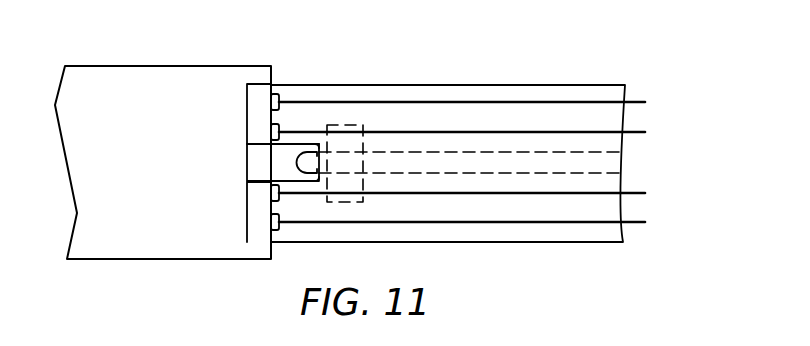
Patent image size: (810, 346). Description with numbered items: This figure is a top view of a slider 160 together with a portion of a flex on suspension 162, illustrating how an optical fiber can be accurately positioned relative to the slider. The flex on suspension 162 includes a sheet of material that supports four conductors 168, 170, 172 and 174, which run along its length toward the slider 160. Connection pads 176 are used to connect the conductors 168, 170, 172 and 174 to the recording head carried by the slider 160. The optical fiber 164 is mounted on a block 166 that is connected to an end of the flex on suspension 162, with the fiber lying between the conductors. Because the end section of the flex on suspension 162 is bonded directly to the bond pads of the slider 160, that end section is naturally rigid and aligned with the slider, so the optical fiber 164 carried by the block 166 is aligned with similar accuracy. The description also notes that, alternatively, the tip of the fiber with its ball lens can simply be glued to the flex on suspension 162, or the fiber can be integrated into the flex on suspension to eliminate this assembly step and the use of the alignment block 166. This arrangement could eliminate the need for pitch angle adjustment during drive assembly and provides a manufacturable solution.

The slider 160 is at (152, 247).
The flex on suspension 162 is at (618, 260).
The optical fiber 164 is at (645, 166).
The block 166 is at (340, 121).
The conductor 168 is at (640, 102).
The conductor 170 is at (640, 132).
The conductor 172 is at (642, 193).
The conductor 174 is at (642, 223).
The connection pads 176 is at (271, 222).